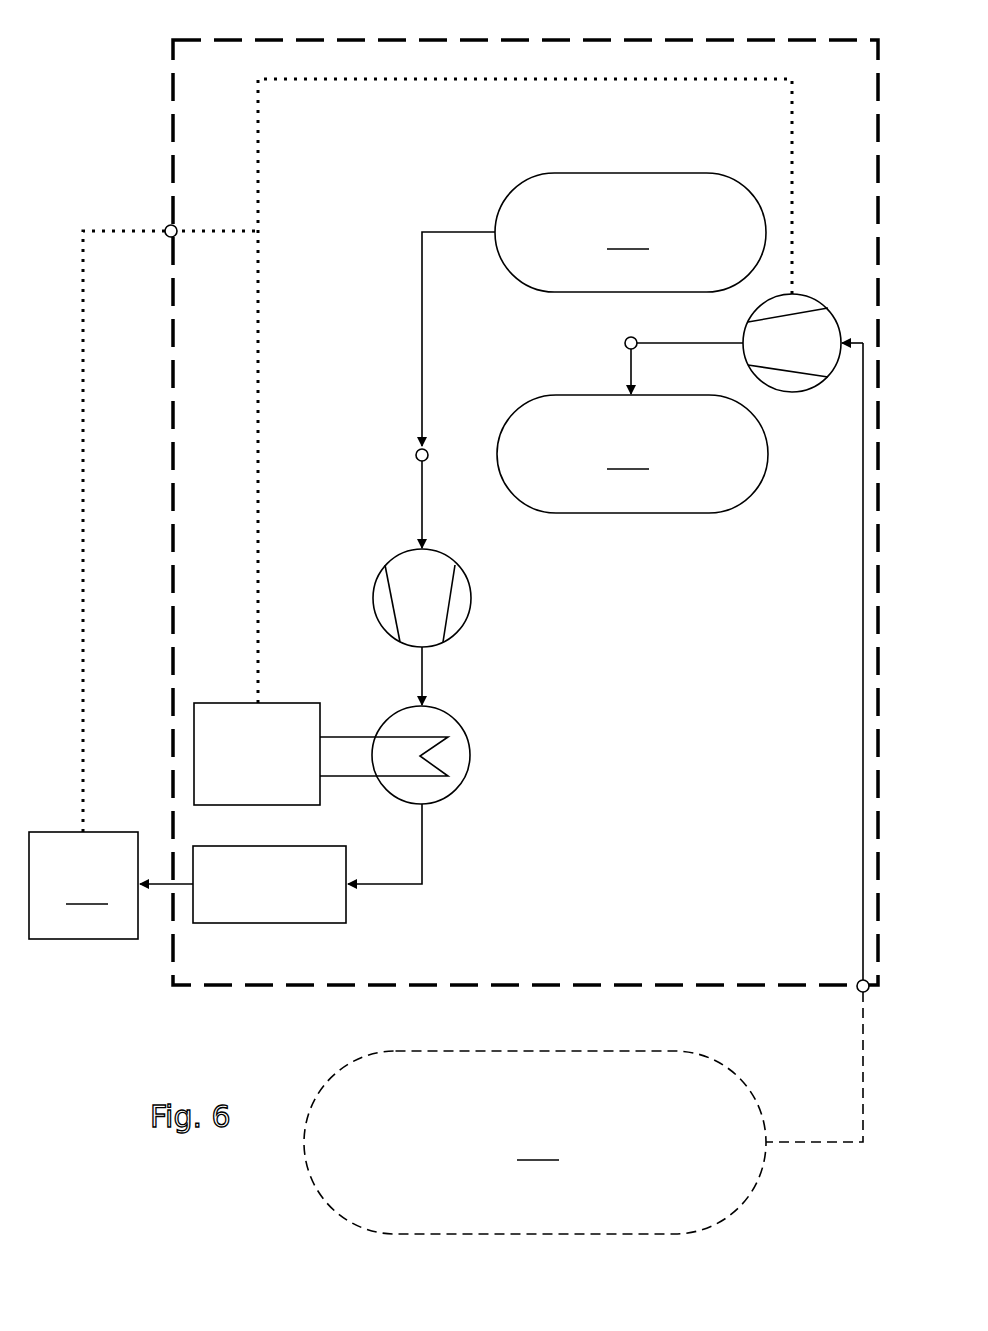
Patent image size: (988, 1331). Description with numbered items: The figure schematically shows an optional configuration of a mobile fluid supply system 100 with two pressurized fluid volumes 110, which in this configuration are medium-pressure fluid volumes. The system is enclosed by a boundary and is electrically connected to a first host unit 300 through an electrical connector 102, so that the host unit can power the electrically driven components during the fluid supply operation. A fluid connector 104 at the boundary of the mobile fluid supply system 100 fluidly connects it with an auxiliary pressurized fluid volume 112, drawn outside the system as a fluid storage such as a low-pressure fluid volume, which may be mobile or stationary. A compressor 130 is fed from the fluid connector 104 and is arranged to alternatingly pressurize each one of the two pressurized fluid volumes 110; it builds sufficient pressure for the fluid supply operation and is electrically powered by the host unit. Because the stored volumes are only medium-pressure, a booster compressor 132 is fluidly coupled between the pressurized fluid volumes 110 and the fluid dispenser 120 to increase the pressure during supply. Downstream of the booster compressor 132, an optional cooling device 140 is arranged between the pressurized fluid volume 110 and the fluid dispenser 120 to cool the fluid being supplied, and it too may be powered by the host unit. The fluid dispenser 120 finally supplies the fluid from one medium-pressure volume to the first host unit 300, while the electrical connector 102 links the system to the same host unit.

The mobile fluid supply system 100 is at (170, 110).
The electrical connector 102 is at (166, 230).
The fluid connector 104 is at (863, 972).
The pressurized fluid volume 110 is at (631, 343).
The auxiliary pressurized fluid volume 112 is at (535, 1142).
The fluid dispenser 120 is at (315, 908).
The compressor 130 is at (795, 342).
The booster compressor 132 is at (408, 587).
The cooling device 140 is at (343, 718).
The first host unit 300 is at (83, 885).